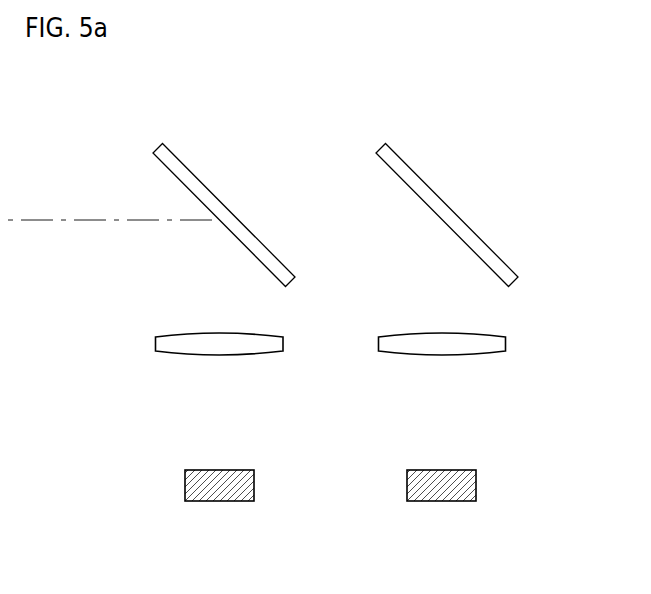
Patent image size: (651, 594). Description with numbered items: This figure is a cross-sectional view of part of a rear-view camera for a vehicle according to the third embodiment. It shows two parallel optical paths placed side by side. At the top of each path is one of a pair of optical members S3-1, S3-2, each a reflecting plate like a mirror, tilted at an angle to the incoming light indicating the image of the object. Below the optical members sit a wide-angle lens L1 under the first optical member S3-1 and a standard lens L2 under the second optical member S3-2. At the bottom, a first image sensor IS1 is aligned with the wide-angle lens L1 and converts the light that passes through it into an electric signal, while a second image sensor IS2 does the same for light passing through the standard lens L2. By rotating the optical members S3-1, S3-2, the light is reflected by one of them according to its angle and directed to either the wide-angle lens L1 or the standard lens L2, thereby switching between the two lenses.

The optical member S3-1 is at (165, 146).
The optical member S3-2 is at (388, 146).
The wide-angle lens L1 is at (155, 343).
The standard lens L2 is at (506, 343).
The first image sensor IS1 is at (185, 483).
The second image sensor IS2 is at (476, 483).